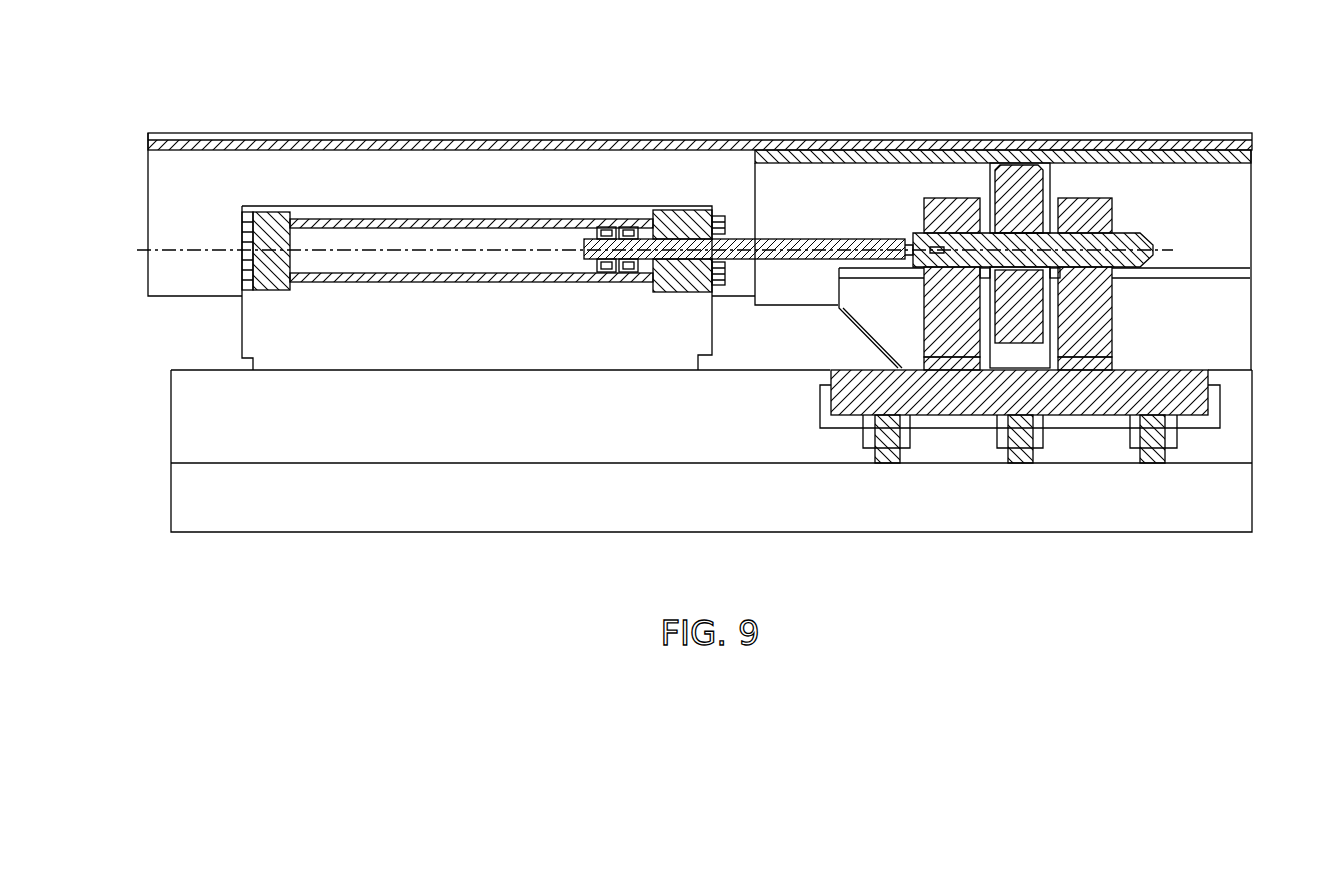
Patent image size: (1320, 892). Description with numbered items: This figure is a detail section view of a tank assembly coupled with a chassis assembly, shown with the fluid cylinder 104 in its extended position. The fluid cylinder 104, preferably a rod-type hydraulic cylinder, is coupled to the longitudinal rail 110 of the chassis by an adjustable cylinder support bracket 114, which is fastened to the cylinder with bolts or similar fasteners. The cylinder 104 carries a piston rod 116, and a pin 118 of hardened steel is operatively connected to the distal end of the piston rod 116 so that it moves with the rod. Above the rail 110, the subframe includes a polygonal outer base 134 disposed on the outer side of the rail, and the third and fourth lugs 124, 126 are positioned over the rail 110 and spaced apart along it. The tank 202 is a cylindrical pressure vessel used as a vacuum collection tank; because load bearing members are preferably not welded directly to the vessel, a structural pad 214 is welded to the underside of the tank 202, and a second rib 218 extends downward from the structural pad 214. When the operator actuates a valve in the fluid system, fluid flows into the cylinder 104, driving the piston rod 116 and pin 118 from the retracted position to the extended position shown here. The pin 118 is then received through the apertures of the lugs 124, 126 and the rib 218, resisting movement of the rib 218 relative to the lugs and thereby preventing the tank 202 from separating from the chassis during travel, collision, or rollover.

The fluid cylinder 104 is at (348, 224).
The longitudinal rail 110 is at (551, 522).
The adjustable cylinder support bracket 114 is at (243, 243).
The piston rod 116 is at (778, 253).
The pin 118 is at (1133, 254).
The third lug 124 is at (963, 325).
The fourth lug 126 is at (1090, 327).
The outer base 134 is at (933, 393).
The tank 202 is at (1246, 140).
The structural pad 214 is at (1238, 158).
The second rib 218 is at (1018, 186).